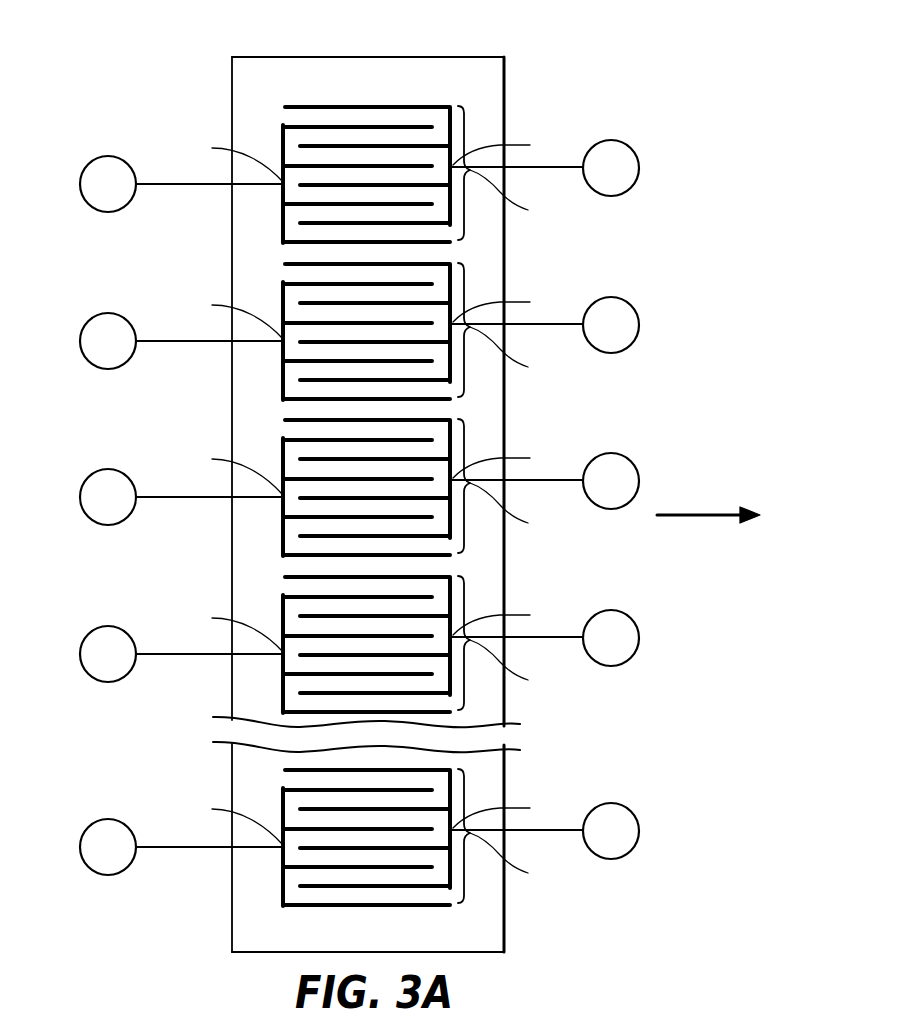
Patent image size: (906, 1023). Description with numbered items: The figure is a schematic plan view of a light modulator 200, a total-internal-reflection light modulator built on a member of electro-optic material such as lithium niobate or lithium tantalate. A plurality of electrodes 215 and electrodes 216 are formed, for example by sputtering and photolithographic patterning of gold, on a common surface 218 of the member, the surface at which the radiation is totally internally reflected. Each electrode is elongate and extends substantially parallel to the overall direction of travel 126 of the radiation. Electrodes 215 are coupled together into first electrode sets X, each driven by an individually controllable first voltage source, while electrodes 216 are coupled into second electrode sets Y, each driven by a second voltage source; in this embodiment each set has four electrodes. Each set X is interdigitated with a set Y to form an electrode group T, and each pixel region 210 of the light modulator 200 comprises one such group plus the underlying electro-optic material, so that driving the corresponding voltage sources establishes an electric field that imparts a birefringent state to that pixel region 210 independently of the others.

The light modulator 200 is at (480, 36).
The pixel region 210 is at (265, 205).
The electrode 215 is at (300, 125).
The electrode 216 is at (423, 106).
The surface 218 is at (380, 946).
The overall direction of travel 126 is at (700, 519).